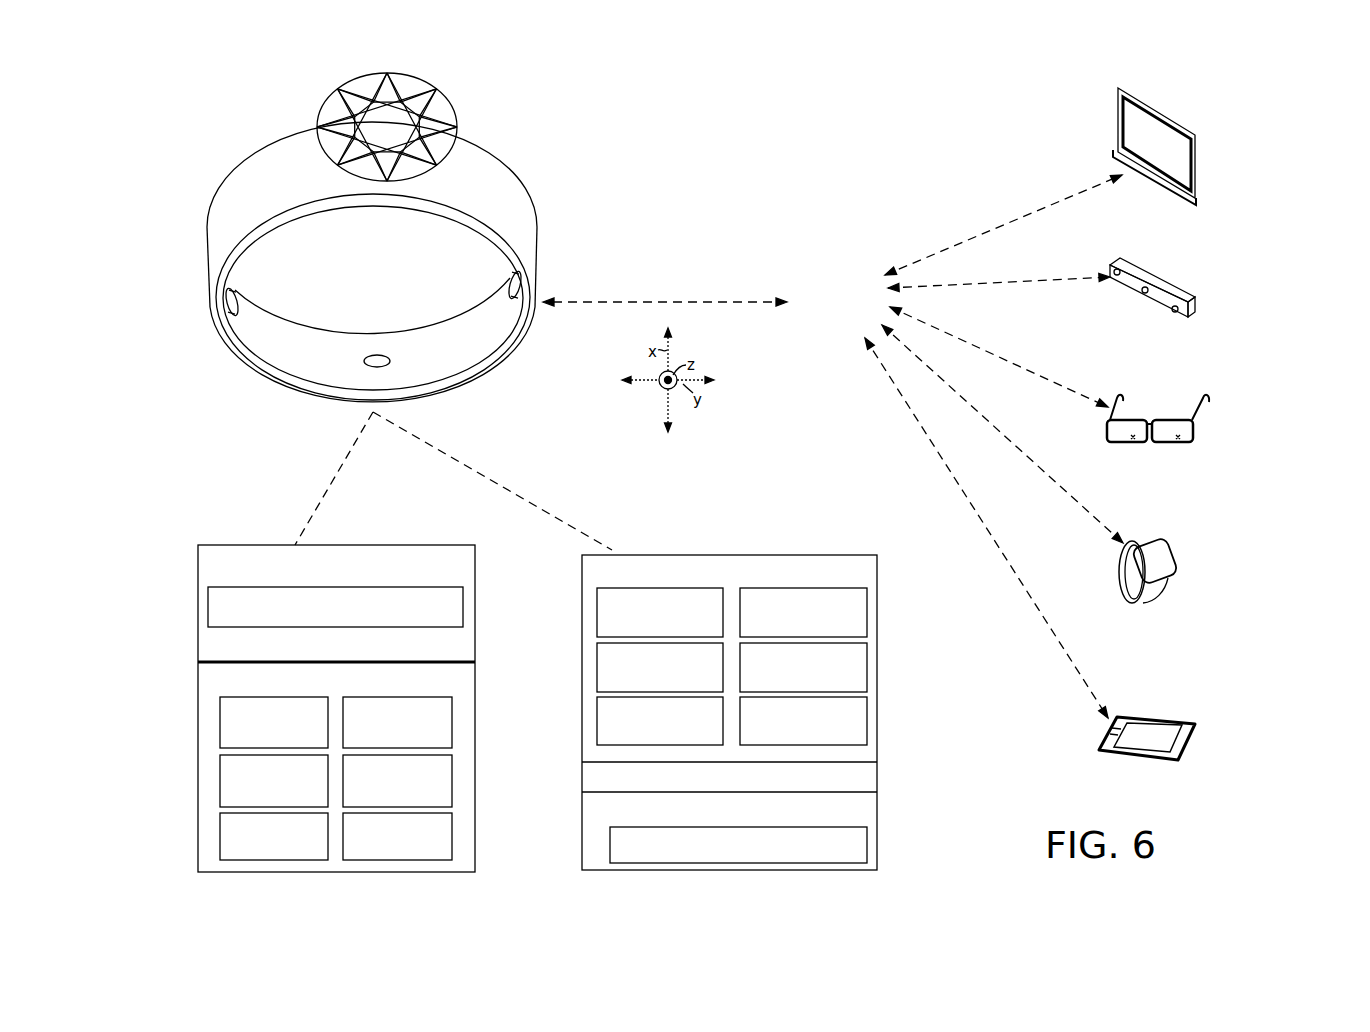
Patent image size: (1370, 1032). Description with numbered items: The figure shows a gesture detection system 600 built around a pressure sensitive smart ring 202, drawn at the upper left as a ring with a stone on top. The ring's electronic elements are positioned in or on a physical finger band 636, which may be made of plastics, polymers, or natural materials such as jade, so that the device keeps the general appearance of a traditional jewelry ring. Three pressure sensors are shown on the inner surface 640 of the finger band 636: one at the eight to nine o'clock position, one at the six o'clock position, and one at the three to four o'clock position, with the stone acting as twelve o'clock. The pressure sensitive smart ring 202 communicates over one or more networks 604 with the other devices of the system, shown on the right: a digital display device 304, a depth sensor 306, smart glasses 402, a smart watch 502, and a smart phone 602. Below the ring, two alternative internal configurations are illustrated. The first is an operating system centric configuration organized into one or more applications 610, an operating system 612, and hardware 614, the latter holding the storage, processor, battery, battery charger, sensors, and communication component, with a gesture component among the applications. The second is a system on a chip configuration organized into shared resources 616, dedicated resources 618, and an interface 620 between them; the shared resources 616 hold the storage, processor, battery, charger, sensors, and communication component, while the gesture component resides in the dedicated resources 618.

The gesture detection system 600 is at (754, 85).
The pressure sensitive smart ring 202 is at (520, 156).
The finger band 636 is at (536, 233).
The inner surface 640 is at (316, 340).
The network 604 is at (962, 446).
The digital display device 304 is at (1143, 96).
The depth sensor 306 is at (1143, 265).
The smart glasses 402 is at (1146, 420).
The smart watch 502 is at (1158, 542).
The smart phone 602 is at (1148, 716).
The applications 610 is at (336, 567).
The operating system 612 is at (335, 642).
The hardware 614 is at (335, 683).
The shared resources 616 is at (729, 576).
The interface 620 is at (729, 780).
The dedicated resources 618 is at (729, 811).